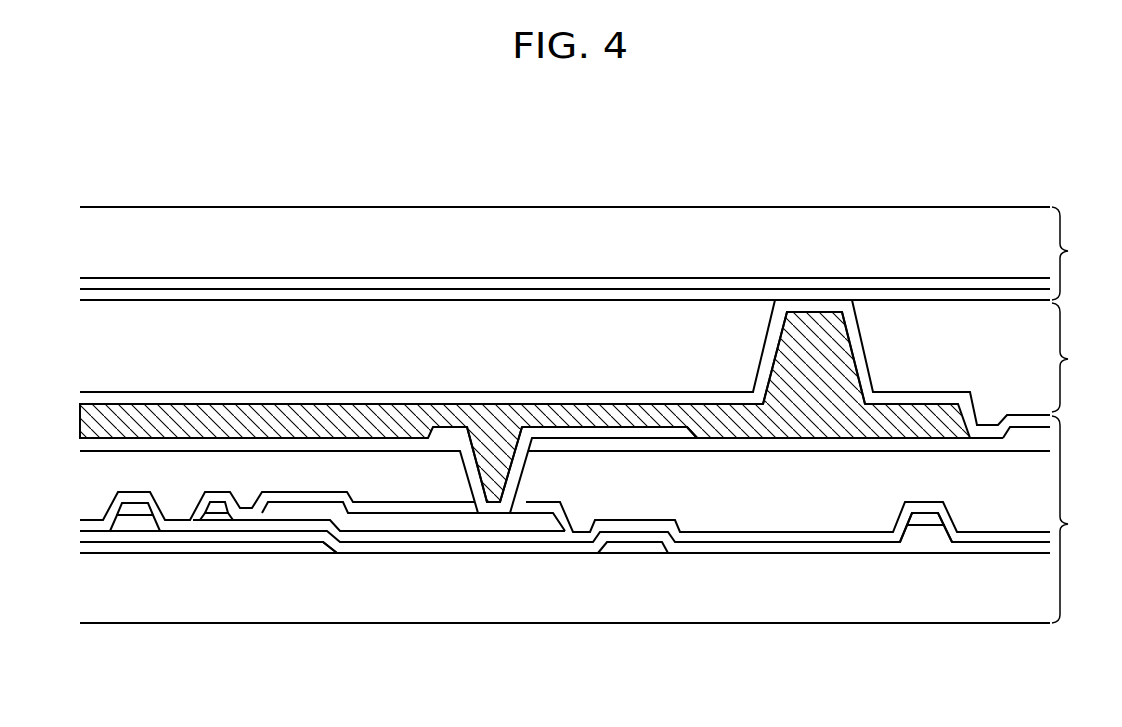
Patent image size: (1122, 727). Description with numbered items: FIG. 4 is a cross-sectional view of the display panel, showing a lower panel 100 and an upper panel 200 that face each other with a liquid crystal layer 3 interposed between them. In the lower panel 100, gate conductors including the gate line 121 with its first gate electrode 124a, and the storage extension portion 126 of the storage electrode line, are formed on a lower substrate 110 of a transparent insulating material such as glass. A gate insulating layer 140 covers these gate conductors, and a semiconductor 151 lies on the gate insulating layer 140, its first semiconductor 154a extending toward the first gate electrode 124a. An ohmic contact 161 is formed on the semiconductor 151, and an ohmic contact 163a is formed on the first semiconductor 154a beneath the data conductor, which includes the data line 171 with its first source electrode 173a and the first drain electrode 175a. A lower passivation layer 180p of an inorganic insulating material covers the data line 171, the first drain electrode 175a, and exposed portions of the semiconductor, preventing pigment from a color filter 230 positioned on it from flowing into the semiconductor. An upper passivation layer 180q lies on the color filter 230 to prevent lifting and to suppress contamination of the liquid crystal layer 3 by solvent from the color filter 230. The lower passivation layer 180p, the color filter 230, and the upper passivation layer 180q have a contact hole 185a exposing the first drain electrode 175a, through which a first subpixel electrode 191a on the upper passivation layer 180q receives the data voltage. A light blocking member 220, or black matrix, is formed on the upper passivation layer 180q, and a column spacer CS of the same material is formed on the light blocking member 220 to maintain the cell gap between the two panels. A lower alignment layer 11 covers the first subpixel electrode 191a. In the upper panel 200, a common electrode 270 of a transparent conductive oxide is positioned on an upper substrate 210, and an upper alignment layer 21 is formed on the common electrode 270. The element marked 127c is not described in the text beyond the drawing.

The upper substrate 210 is at (407, 222).
The common electrode 270 is at (522, 283).
The upper alignment layer 21 is at (633, 296).
The lower alignment layer 11 is at (543, 398).
The light blocking member 220 is at (182, 416).
The column spacer CS is at (812, 330).
The first subpixel electrode 191a is at (625, 412).
The upper passivation layer 180q is at (372, 446).
The contact hole 185a is at (473, 472).
The color filter 230 is at (440, 487).
The lower passivation layer 180p is at (388, 507).
The data line 171 is at (134, 512).
The ohmic contact 161 is at (132, 518).
The semiconductor 151 is at (145, 527).
The first source electrode 173a is at (222, 508).
The ohmic contact 163a is at (217, 517).
The first drain electrode 175a is at (596, 463).
The first semiconductor 154a is at (290, 526).
The gate insulating layer 140 is at (527, 545).
The gate line 121 is at (100, 550).
The first gate electrode 124a is at (255, 550).
The storage extension portion 126 is at (643, 548).
The storage electrode 127c is at (925, 526).
The lower substrate 110 is at (720, 600).
The upper panel 200 is at (1082, 253).
The liquid crystal layer 3 is at (1076, 357).
The lower panel 100 is at (1082, 519).